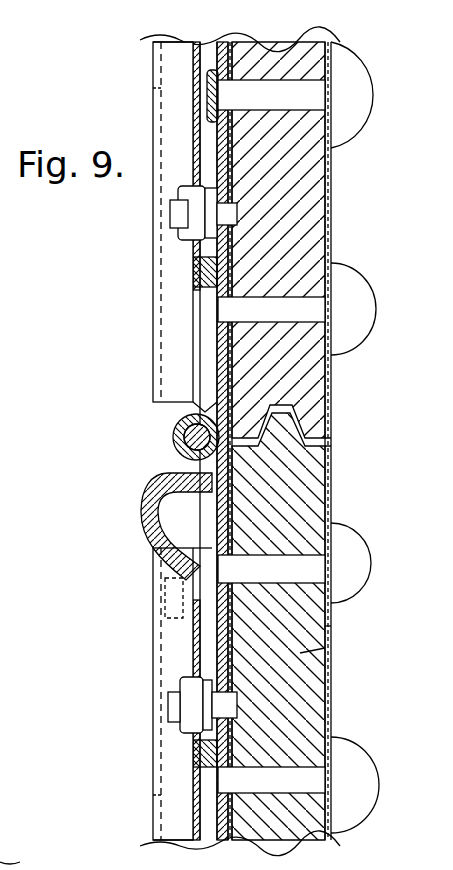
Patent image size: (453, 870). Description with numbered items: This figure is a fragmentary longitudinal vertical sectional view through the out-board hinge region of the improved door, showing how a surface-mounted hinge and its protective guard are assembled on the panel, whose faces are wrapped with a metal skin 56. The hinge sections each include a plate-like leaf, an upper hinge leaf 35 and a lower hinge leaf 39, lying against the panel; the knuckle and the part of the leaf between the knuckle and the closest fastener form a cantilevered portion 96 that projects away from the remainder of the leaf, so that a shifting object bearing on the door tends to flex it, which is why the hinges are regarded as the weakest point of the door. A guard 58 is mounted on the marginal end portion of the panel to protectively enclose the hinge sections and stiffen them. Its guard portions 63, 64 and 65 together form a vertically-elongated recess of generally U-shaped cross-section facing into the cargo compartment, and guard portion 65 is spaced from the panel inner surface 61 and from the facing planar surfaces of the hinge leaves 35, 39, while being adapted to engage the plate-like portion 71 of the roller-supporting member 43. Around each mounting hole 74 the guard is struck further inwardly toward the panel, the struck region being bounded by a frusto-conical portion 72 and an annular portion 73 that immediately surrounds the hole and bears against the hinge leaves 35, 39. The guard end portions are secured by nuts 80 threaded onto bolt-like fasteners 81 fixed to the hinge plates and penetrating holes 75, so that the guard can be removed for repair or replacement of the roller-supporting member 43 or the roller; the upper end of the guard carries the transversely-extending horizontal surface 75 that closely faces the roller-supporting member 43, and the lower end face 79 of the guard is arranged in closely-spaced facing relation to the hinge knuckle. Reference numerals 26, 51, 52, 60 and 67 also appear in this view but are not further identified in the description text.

The roller 26 is at (160, 434).
The upper hinge leaf 35 is at (330, 147).
The lower hinge leaf 39 is at (300, 653).
The roller-supporting member 43 is at (135, 504).
The upper end cap 51 is at (345, 43).
The lower end cap 52 is at (346, 830).
The metal skin 56 is at (331, 406).
The guard 58 is at (148, 280).
The base 60 is at (30, 865).
The panel inner surface 61 is at (205, 252).
The guard portion 63 is at (153, 88).
The guard portion 64 is at (160, 36).
The guard portion 65 is at (195, 113).
The spacer layer 67 is at (155, 68).
The plate-like portion 71 is at (330, 626).
The frusto-conical portion 72 is at (230, 150).
The annular portion 73 is at (230, 187).
The mounting hole 74 is at (237, 217).
The transversely-extending horizontal surface 75 is at (162, 557).
The lower end face 79 is at (190, 412).
The nut 80 is at (178, 192).
The bolt-like fastener 81 is at (170, 215).
The cantilevered portion 96 is at (232, 375).